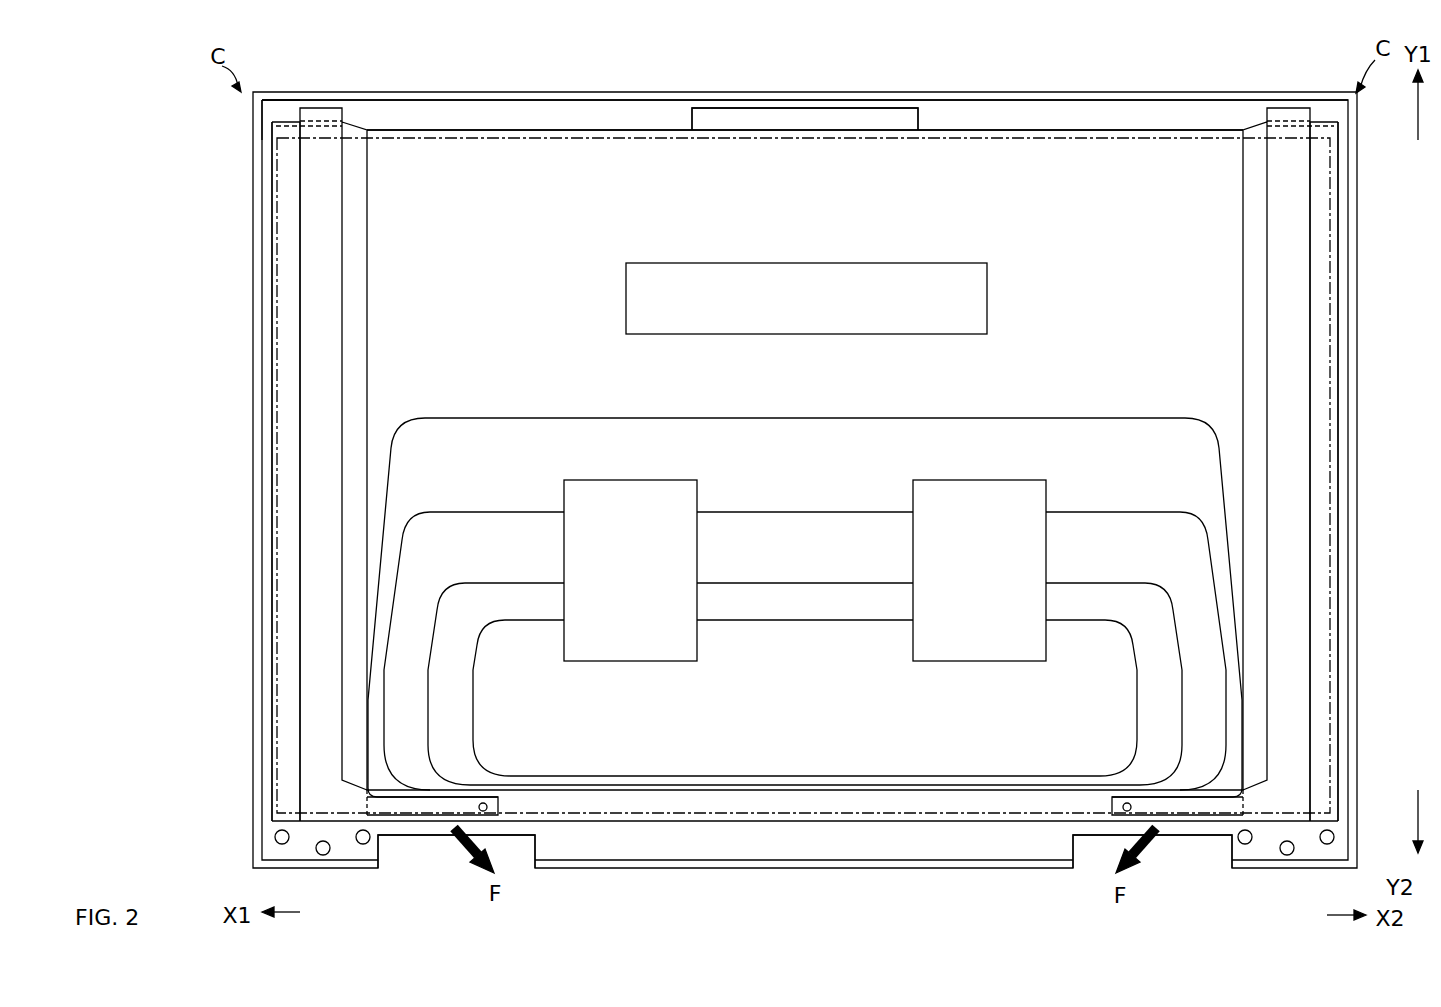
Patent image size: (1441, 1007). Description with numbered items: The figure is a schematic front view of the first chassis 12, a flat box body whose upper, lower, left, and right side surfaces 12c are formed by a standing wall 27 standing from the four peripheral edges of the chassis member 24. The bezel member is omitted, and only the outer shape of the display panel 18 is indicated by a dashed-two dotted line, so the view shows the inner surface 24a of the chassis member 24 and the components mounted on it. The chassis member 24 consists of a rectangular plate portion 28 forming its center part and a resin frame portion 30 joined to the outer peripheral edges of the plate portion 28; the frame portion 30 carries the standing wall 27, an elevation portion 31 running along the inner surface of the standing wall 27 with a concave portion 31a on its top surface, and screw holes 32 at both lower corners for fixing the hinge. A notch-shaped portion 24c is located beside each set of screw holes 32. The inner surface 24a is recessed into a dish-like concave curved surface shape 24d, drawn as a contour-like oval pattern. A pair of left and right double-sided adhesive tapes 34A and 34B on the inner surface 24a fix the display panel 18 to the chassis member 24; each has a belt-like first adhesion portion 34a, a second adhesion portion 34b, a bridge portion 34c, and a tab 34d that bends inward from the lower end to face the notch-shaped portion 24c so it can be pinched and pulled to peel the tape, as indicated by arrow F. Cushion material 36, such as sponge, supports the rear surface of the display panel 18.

The first chassis 12 is at (186, 62).
The side surfaces 12c is at (1040, 92).
The display panel 18 is at (1161, 133).
The chassis member 24 is at (647, 62).
The inner surface 24a is at (810, 165).
The notch-shaped portion 24c is at (520, 846).
The concave curved surface shape 24d is at (786, 712).
The standing wall 27 is at (1128, 100).
The plate portion 28 is at (621, 154).
The frame portion 30 is at (551, 114).
The elevation portion 31 is at (455, 100).
The concave portion 31a is at (283, 108).
The screw holes 32 is at (362, 845).
The double-sided adhesive tape 34A is at (292, 236).
The double-sided adhesive tape 34B is at (1318, 236).
The first adhesion portion 34a is at (316, 440).
The second adhesion portion 34b is at (322, 112).
The bridge portion 34c is at (330, 126).
The tab 34d is at (430, 805).
The cushion material 36 is at (940, 263).